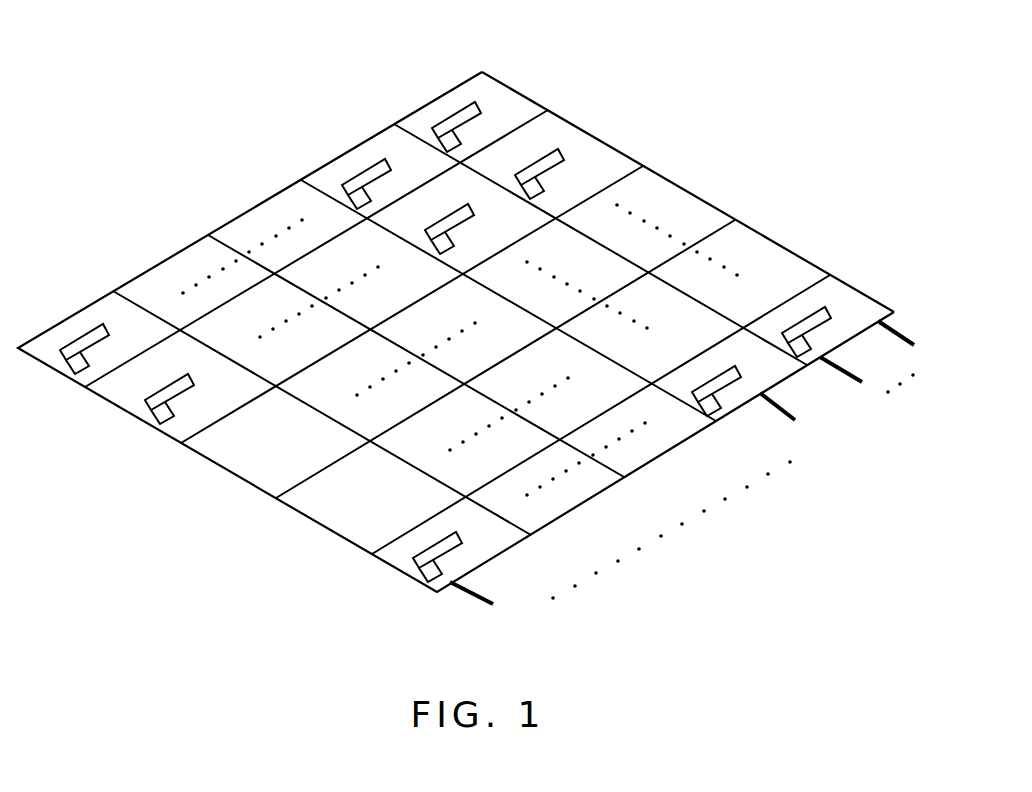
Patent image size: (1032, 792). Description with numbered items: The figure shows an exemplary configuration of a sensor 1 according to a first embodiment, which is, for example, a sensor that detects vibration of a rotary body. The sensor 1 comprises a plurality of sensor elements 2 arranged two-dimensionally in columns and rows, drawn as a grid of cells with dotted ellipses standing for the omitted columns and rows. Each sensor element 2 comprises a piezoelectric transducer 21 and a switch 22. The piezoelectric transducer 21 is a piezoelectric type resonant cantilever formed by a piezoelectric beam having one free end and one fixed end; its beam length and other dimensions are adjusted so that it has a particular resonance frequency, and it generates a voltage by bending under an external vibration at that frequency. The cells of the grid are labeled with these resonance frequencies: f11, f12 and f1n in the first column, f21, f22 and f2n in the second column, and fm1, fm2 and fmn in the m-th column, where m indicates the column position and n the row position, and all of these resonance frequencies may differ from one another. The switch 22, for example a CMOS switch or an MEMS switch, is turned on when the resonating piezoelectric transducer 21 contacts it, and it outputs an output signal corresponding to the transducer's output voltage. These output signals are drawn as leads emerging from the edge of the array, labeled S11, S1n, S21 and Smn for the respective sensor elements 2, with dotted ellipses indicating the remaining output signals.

The sensor 1 is at (637, 72).
The sensor element 2 is at (483, 64).
The piezoelectric transducer 21 is at (445, 121).
The switch 22 is at (524, 91).
The resonance frequency f11 is at (465, 115).
The resonance frequency f12 is at (539, 159).
The resonance frequency f1n is at (813, 320).
The resonance frequency f21 is at (374, 172).
The resonance frequency f22 is at (449, 215).
The resonance frequency f2n is at (721, 378).
The resonance frequency fm1 is at (96, 337).
The resonance frequency fm2 is at (171, 383).
The resonance frequency fmn is at (447, 544).
The output signal S11 is at (908, 346).
The output signal S1n is at (853, 383).
The output signal S21 is at (797, 418).
The output signal Smn is at (493, 605).